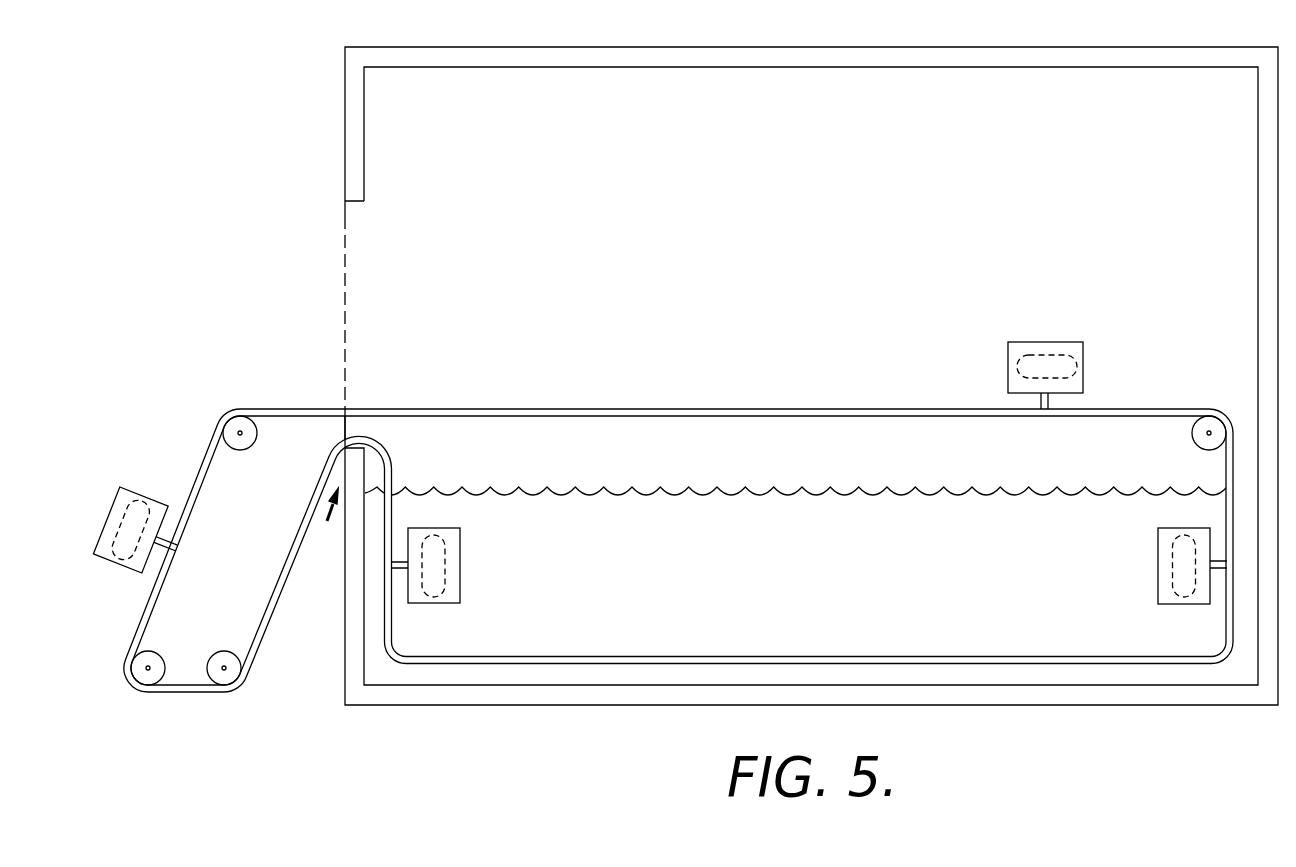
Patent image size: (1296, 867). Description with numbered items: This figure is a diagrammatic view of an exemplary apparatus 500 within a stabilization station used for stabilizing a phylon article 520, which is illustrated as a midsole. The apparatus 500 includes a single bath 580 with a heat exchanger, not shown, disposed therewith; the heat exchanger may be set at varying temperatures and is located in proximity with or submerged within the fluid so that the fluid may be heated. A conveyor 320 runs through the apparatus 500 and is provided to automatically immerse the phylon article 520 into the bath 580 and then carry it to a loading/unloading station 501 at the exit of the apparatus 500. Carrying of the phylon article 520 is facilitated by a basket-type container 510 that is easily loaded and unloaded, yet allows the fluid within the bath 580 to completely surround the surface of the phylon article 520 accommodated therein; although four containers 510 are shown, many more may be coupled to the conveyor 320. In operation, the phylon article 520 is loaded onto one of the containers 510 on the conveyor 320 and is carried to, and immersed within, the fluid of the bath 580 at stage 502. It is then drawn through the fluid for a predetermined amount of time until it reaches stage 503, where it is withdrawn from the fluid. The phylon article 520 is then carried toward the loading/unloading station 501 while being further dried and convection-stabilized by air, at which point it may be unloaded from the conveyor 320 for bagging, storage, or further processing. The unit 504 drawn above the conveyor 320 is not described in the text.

The apparatus 500 is at (928, 31).
The conveyor 320 is at (594, 409).
The bath 580 is at (831, 572).
The loading/unloading station 501 is at (136, 554).
The basket-type container 510 is at (130, 530).
The phylon article 520 is at (112, 566).
The stage 502 is at (461, 564).
The stage 503 is at (1158, 562).
The upper processing unit 504 is at (1045, 342).